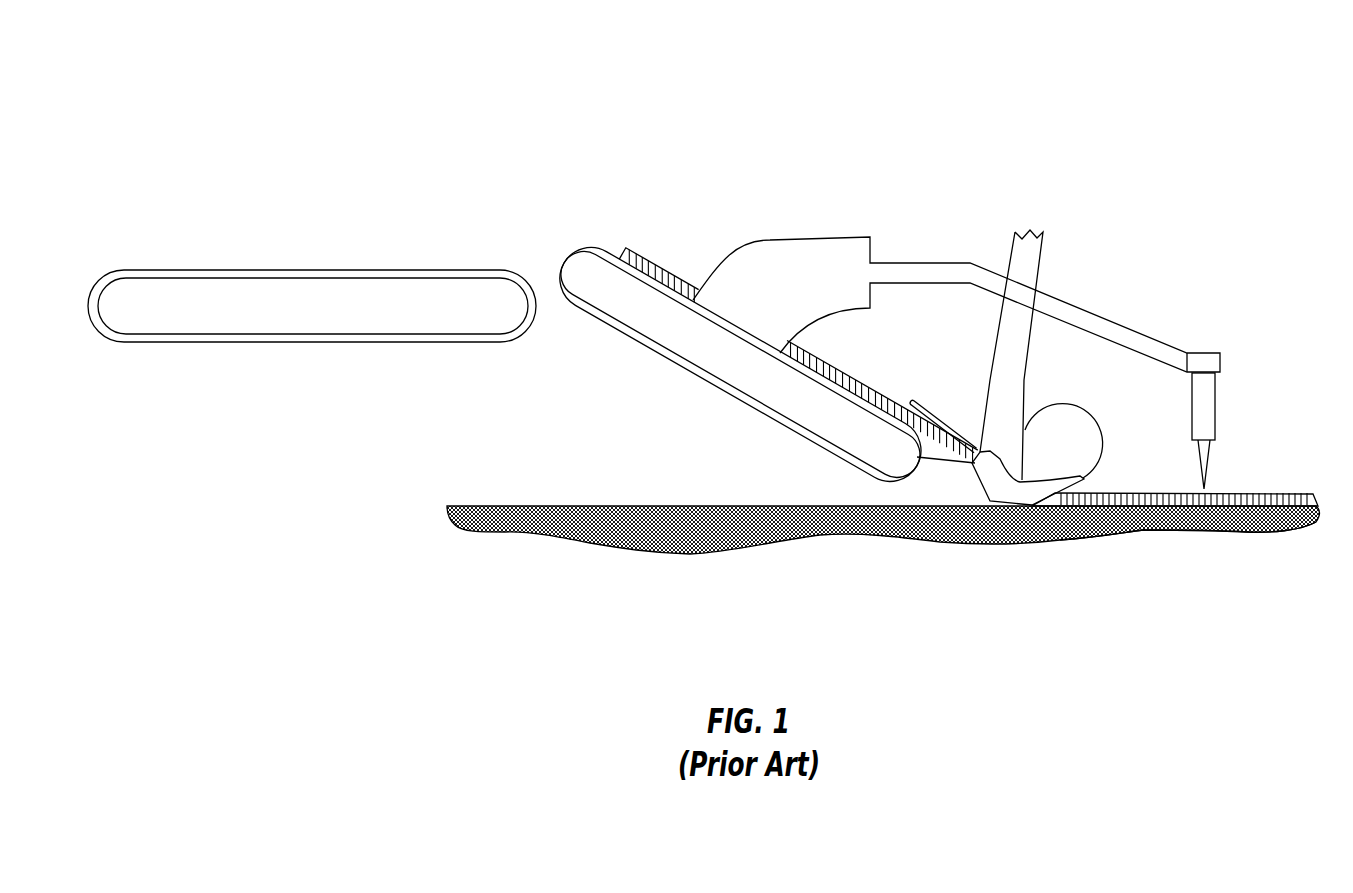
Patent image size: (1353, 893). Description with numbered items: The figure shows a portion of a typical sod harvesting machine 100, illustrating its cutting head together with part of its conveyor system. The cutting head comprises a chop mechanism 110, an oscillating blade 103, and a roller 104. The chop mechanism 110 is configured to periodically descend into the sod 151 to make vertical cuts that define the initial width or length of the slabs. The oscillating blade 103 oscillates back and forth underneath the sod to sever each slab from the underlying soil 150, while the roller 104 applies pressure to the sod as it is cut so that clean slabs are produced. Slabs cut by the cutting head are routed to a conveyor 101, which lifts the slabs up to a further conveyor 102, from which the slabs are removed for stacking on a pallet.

The sod harvesting machine 100 is at (730, 37).
The conveyor 101 is at (617, 330).
The conveyor 102 is at (162, 342).
The oscillating blade 103 is at (987, 531).
The roller 104 is at (1081, 424).
The chop mechanism 110 is at (1218, 413).
The soil 150 is at (447, 525).
The sod 151 is at (1251, 532).